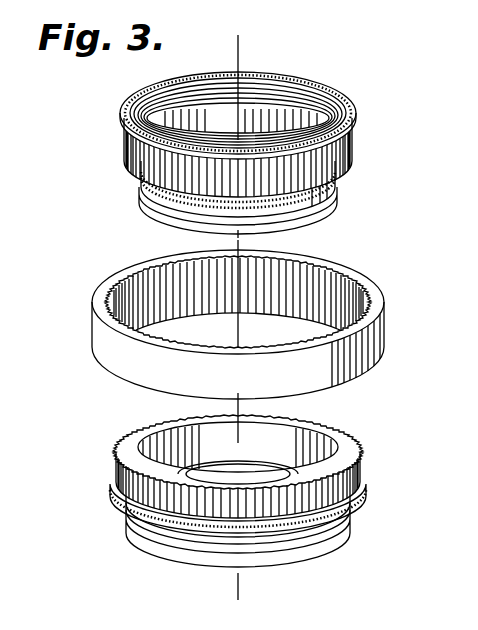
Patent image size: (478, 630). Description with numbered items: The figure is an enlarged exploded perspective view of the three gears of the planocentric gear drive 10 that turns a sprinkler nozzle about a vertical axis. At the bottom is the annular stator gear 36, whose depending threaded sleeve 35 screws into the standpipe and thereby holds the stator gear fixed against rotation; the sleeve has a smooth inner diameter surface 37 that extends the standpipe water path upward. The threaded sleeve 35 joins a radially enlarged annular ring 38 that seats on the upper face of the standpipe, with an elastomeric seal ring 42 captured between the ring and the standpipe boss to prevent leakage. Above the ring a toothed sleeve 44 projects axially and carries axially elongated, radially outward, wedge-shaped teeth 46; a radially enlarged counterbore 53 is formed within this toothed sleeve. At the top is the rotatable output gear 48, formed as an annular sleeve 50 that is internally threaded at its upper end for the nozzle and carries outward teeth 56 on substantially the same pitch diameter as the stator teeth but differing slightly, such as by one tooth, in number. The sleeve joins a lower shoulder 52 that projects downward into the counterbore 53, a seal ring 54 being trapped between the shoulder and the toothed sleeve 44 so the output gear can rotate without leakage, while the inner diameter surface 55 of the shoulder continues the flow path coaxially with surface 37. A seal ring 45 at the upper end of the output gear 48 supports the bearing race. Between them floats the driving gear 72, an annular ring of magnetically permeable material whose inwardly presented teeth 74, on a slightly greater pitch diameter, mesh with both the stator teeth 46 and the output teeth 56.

The planocentric gear drive 10 is at (342, 75).
The threaded sleeve 35 is at (112, 518).
The stator gear 36 is at (233, 495).
The inner diameter surface 37 is at (224, 482).
The annular ring 38 is at (357, 534).
The seal ring 42 is at (370, 510).
The toothed sleeve 44 is at (328, 428).
The seal ring 45 is at (346, 103).
The teeth 46 is at (358, 484).
The output gear 48 is at (228, 139).
The annular sleeve 50 is at (130, 97).
The lower shoulder 52 is at (318, 214).
The counterbore 53 is at (160, 440).
The seal ring 54 is at (335, 191).
The inner diameter surface 55 is at (245, 128).
The teeth 56 is at (122, 170).
The driving gear 72 is at (220, 324).
The teeth 74 is at (336, 291).